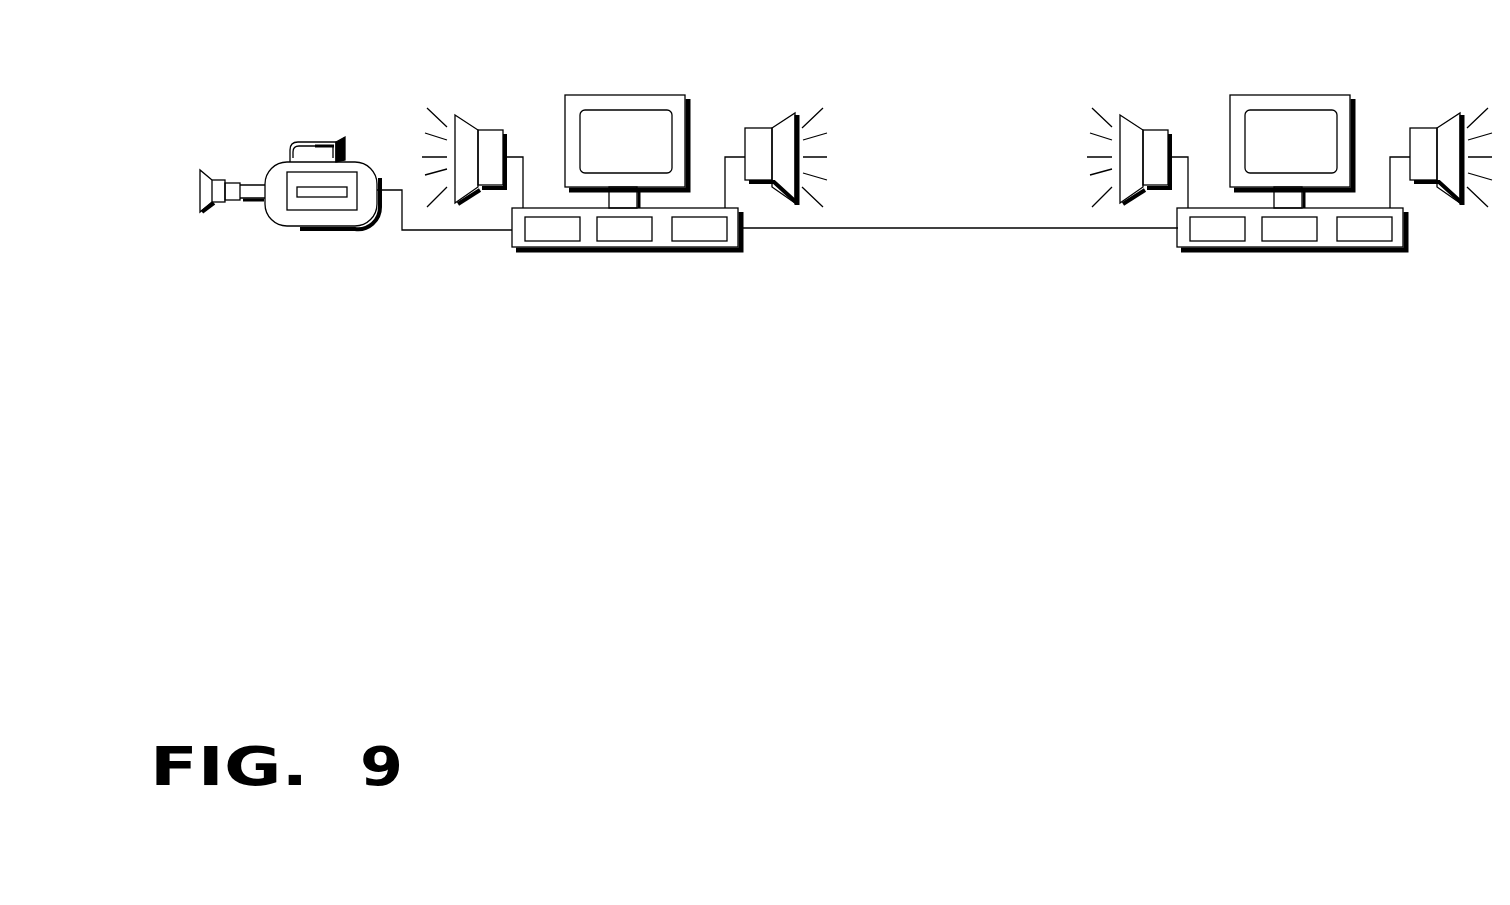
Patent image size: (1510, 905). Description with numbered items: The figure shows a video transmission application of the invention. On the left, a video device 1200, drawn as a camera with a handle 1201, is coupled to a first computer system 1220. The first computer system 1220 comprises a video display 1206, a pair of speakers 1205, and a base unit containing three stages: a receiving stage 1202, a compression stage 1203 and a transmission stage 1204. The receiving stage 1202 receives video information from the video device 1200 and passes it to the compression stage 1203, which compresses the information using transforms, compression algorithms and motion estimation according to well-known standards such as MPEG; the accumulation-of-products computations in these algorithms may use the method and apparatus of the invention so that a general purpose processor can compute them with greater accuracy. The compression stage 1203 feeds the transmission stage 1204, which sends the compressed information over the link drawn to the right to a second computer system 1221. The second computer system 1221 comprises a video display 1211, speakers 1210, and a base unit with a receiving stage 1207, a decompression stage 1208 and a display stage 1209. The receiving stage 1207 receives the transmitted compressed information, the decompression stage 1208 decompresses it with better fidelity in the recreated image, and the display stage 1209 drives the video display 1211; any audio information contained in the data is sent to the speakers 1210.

The video device 1200 is at (325, 222).
The camera handle 1201 is at (310, 141).
The receiving stage 1202 is at (552, 236).
The compression stage 1203 is at (626, 236).
The transmission stage 1204 is at (700, 236).
The speakers 1205 is at (491, 129).
The video display 1206 is at (625, 165).
The receiving stage 1207 is at (1217, 236).
The decompression stage 1208 is at (1291, 236).
The display stage 1209 is at (1365, 236).
The speakers 1210 is at (1158, 128).
The video display 1211 is at (1290, 165).
The first computer system 1220 is at (635, 189).
The second computer system 1221 is at (1283, 188).